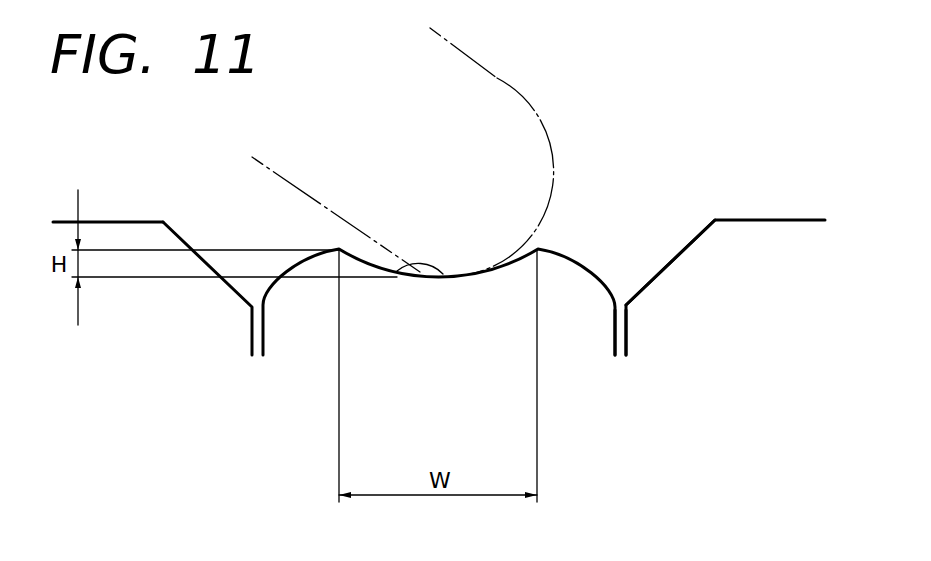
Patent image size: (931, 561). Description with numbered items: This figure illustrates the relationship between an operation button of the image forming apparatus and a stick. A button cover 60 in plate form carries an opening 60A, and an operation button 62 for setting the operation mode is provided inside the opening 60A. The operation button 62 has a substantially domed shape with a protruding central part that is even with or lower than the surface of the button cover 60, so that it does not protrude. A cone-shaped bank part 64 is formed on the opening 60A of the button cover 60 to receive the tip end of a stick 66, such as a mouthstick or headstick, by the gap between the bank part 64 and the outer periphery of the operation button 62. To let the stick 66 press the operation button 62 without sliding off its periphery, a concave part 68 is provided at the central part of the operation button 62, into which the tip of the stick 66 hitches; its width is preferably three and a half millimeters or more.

The button cover 60 is at (783, 218).
The opening 60A is at (622, 333).
The operation button 62 is at (575, 288).
The bank part 64 is at (658, 270).
The stick 66 is at (475, 90).
The concave part 68 is at (447, 279).